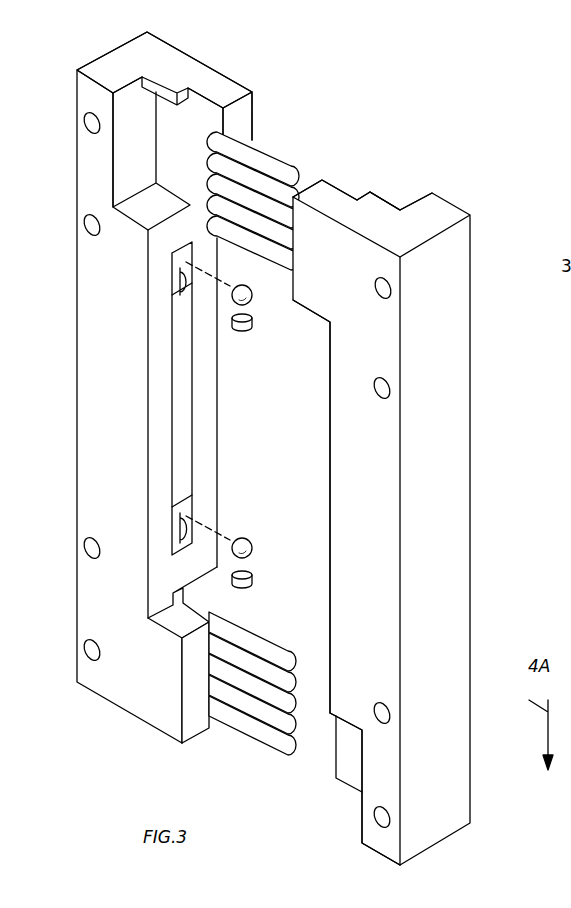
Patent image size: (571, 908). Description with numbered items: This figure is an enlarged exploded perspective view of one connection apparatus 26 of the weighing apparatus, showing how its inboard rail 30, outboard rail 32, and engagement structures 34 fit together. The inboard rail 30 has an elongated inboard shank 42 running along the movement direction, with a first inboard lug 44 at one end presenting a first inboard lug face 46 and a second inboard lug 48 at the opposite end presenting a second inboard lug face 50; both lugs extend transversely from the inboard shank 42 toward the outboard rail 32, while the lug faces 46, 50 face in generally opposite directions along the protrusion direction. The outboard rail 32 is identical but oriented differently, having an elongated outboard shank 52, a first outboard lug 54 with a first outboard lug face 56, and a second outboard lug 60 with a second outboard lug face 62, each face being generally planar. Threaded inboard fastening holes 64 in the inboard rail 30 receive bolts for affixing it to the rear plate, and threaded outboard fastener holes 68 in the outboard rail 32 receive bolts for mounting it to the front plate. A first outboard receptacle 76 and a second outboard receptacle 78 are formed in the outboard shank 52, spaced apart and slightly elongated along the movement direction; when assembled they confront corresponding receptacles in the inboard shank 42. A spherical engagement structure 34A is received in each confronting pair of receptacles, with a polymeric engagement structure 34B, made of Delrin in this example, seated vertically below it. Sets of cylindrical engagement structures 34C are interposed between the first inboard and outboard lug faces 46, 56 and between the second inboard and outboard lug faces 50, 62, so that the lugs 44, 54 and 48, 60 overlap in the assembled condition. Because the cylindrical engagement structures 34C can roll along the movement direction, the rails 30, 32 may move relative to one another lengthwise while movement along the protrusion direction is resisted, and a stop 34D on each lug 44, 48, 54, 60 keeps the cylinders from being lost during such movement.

The connection apparatus 26 is at (289, 436).
The inboard rail 30 is at (417, 503).
The outboard rail 32 is at (253, 395).
The engagement structures 34 is at (234, 450).
The spherical engagement structure 34A is at (234, 298).
The polymeric engagement structure 34B is at (246, 332).
The cylindrical engagement structures 34C is at (272, 217).
The stop 34D is at (140, 78).
The inboard shank 42 is at (328, 423).
The first inboard lug 44 is at (326, 188).
The first inboard lug face 46 is at (348, 190).
The second inboard lug 48 is at (347, 788).
The second inboard lug face 50 is at (343, 763).
The outboard shank 52 is at (207, 432).
The first outboard lug 54 is at (222, 90).
The first outboard lug face 56 is at (182, 117).
The second outboard lug 60 is at (190, 755).
The second outboard lug face 62 is at (195, 614).
The inboard fastening holes 64 is at (378, 285).
The outboard fastener holes 68 is at (88, 115).
The first outboard receptacle 76 is at (173, 287).
The second outboard receptacle 78 is at (172, 550).